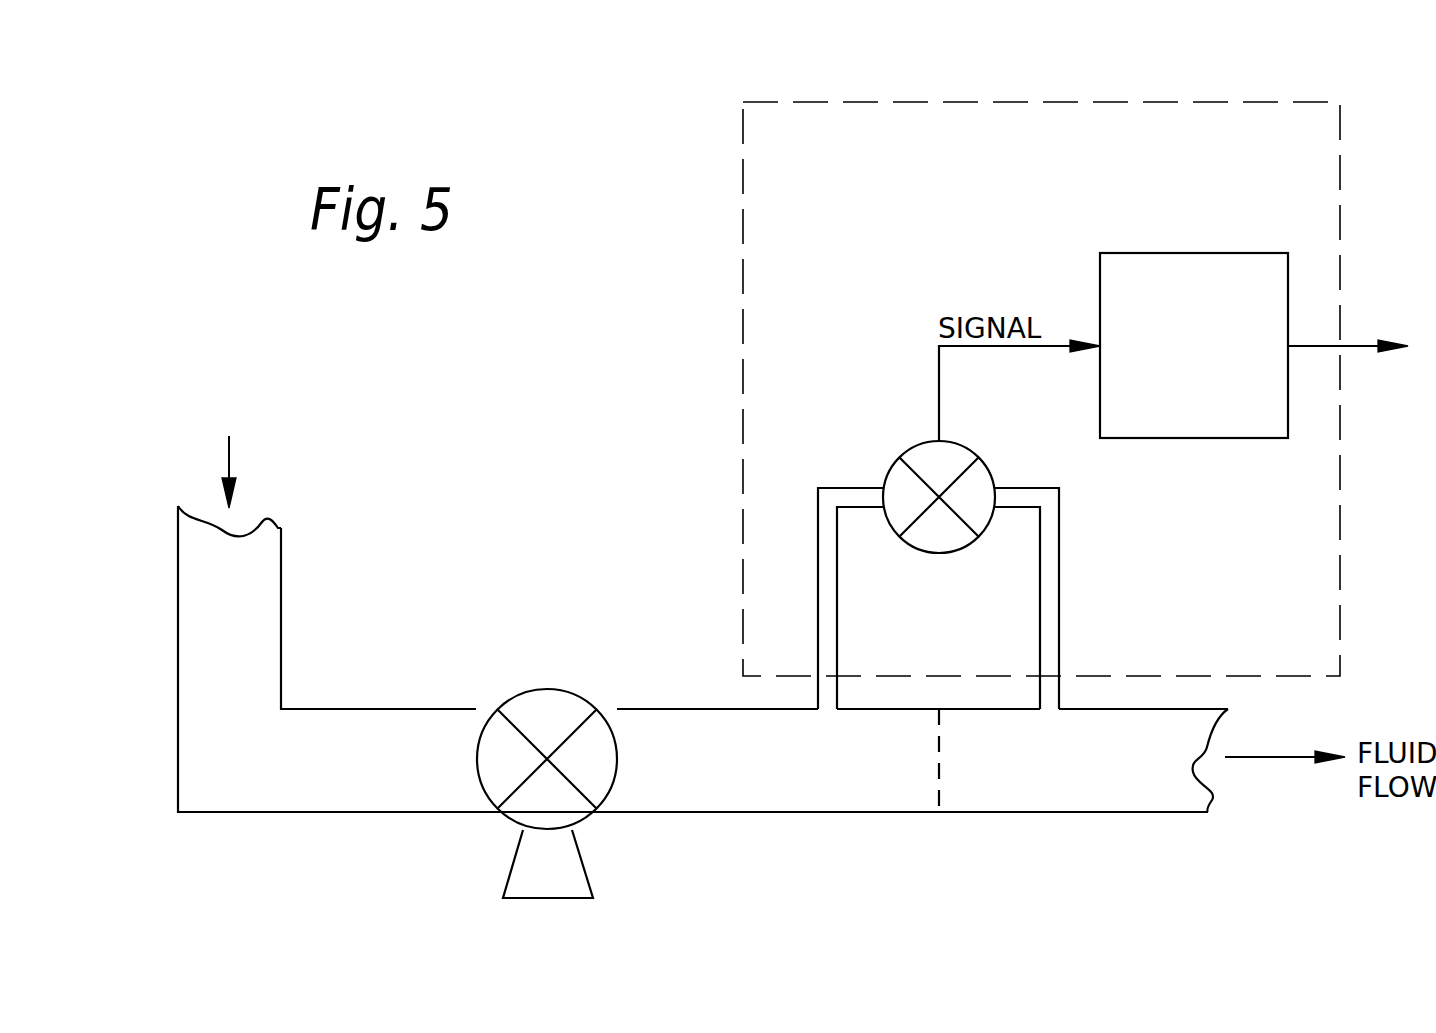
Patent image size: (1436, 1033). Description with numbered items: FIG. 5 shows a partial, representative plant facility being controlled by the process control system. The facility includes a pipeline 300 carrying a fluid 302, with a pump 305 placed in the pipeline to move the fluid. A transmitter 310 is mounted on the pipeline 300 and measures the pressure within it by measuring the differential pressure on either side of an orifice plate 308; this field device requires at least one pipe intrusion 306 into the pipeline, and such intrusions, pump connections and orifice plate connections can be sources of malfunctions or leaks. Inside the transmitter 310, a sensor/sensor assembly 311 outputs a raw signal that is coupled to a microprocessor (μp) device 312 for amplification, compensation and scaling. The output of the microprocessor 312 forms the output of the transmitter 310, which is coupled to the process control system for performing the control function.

The pipeline 300 is at (252, 813).
The fluid 302 is at (382, 764).
The pump 305 is at (548, 688).
The pipe intrusion 306 is at (832, 709).
The orifice plate 308 is at (940, 769).
The transmitter 310 is at (1048, 148).
The sensor/sensor assembly 311 is at (940, 555).
The microprocessor (μp) device 312 is at (1208, 252).